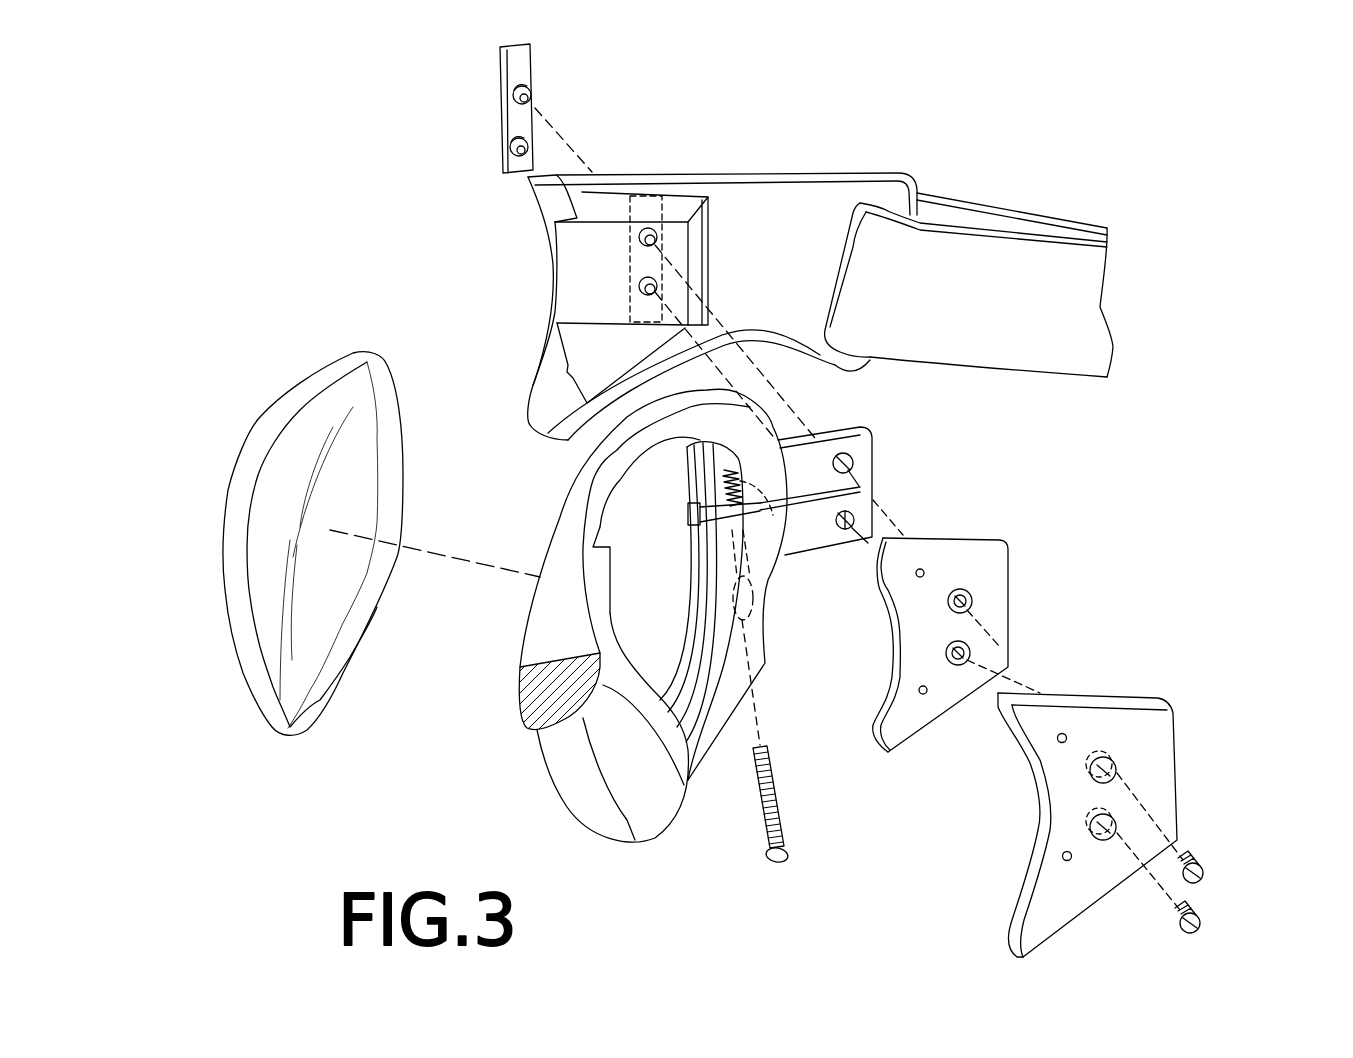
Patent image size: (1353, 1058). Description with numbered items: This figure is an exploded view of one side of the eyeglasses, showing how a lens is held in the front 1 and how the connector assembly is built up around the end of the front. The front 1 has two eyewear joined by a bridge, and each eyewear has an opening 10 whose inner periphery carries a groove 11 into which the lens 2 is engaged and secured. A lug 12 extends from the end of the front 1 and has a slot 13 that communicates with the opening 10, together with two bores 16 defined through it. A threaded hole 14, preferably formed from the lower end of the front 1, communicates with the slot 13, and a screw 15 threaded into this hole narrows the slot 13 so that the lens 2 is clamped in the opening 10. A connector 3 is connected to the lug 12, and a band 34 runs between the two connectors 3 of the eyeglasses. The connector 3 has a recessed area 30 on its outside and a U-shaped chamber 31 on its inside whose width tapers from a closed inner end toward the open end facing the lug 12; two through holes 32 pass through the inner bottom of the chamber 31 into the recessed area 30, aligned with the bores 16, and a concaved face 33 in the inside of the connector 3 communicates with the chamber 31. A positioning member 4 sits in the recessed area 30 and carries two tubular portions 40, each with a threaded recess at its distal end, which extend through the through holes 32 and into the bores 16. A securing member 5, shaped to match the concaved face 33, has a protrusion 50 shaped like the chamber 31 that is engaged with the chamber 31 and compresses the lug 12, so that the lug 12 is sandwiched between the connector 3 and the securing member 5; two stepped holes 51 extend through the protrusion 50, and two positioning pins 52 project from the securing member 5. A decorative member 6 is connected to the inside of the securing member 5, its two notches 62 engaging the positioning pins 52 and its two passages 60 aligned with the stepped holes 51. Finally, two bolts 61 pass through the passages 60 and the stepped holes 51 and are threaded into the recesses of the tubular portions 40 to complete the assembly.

The front 1 is at (646, 626).
The lens 2 is at (305, 366).
The connector 3 is at (793, 257).
The positioning member 4 is at (485, 108).
The securing member 5 is at (956, 611).
The decorative member 6 is at (1139, 796).
The opening 10 is at (635, 522).
The groove 11 is at (690, 683).
The lug 12 is at (814, 513).
The slot 13 is at (817, 497).
The threaded hole 14 is at (778, 505).
The screw 15 is at (778, 797).
The bore 16 is at (853, 463).
The recessed area 30 is at (646, 204).
The chamber 31 is at (578, 280).
The through hole 32 is at (653, 238).
The concaved face 33 is at (588, 357).
The band 34 is at (1030, 253).
The tubular portion 40 is at (498, 76).
The protrusion 50 is at (886, 643).
The stepped hole 51 is at (975, 602).
The positioning pin 52 is at (923, 568).
The passage 60 is at (1114, 773).
The bolt 61 is at (1205, 876).
The notch 62 is at (1064, 733).